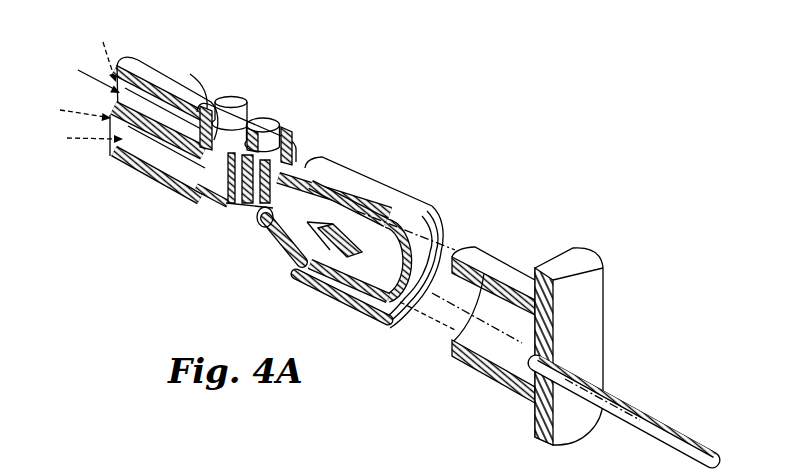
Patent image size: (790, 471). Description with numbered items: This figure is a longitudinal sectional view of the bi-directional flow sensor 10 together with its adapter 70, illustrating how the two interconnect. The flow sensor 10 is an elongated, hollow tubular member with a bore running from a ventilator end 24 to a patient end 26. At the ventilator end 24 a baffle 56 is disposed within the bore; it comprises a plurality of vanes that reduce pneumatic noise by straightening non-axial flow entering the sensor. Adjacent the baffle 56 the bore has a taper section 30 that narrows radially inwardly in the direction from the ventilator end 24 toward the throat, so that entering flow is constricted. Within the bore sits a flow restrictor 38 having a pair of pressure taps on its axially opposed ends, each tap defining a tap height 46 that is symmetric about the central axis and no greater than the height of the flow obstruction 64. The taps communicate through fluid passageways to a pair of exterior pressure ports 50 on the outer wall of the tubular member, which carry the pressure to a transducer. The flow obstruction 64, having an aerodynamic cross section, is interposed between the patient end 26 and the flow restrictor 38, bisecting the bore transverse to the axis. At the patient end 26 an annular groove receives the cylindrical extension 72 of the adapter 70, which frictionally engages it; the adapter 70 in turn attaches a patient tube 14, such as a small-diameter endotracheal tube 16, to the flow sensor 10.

The flow sensor 10 is at (204, 60).
The pressure ports 50 is at (273, 130).
The ventilator end 24 is at (140, 116).
The taper section 30 is at (143, 158).
The baffle 56 is at (160, 170).
The tap height 46 is at (212, 185).
The flow restrictor 38 is at (273, 230).
The flow obstruction 64 is at (310, 260).
The patient end 26 is at (387, 323).
The cylindrical extension 72 is at (470, 370).
The adapter 70 is at (614, 260).
The patient tube 14 is at (624, 409).
The endotracheal tube 16 is at (660, 404).